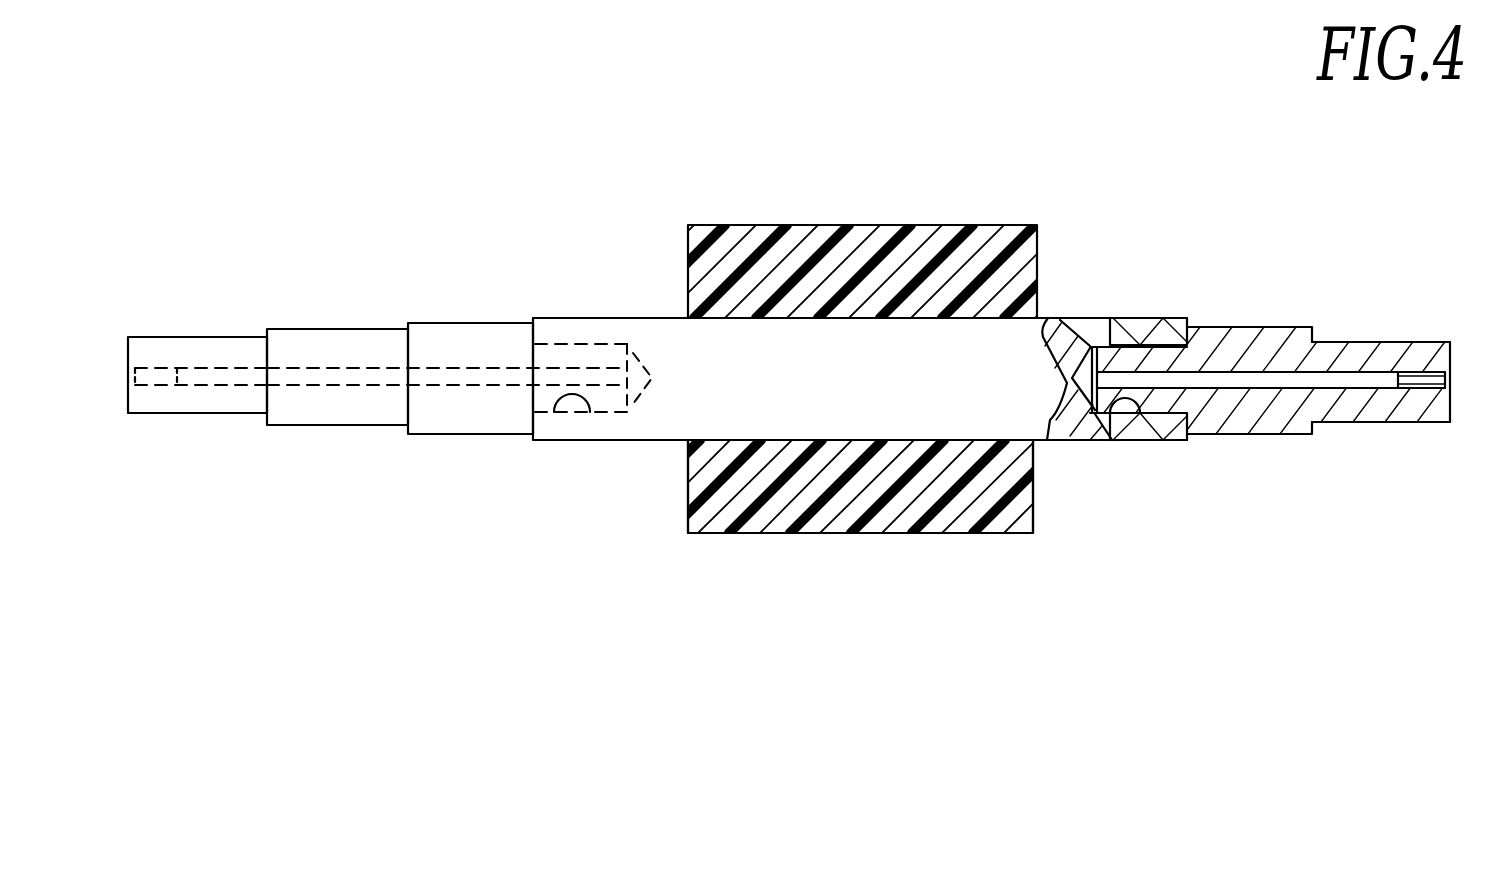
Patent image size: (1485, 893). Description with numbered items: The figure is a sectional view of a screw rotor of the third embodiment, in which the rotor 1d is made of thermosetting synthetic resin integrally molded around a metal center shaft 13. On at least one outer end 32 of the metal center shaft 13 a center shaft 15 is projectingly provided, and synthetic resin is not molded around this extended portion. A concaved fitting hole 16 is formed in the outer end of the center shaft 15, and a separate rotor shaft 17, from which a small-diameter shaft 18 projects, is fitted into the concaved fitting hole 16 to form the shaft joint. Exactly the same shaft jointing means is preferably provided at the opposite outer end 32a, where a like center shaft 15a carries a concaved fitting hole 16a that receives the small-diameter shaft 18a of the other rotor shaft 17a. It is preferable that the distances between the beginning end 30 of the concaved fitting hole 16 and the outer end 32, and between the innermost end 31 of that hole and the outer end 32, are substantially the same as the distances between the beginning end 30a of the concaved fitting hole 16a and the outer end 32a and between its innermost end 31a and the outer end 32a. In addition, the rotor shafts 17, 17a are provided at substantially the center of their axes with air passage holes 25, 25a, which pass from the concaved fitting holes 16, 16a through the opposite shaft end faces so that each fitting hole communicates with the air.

The rotor 1d is at (762, 224).
The center shaft 13 is at (863, 443).
The center shaft 15 is at (1052, 318).
The center shaft 15a is at (650, 317).
The concaved fitting hole 16 is at (1105, 410).
The concaved fitting hole 16a is at (560, 398).
The rotor shaft 17 is at (1247, 327).
The rotor shaft 17a is at (450, 322).
The small-diameter shaft 18 is at (1150, 335).
The small-diameter shaft 18a is at (577, 344).
The air passage hole 25 is at (1358, 355).
The air passage hole 25a is at (222, 367).
The beginning end of the concaved fitting hole 30 is at (1200, 327).
The beginning end of the concaved fitting hole 30a is at (528, 420).
The innermost end of the concaved fitting hole 31 is at (1100, 347).
The innermost end of the concaved fitting hole 31a is at (614, 365).
The outer end 32 is at (1035, 500).
The outer end 32a is at (687, 503).